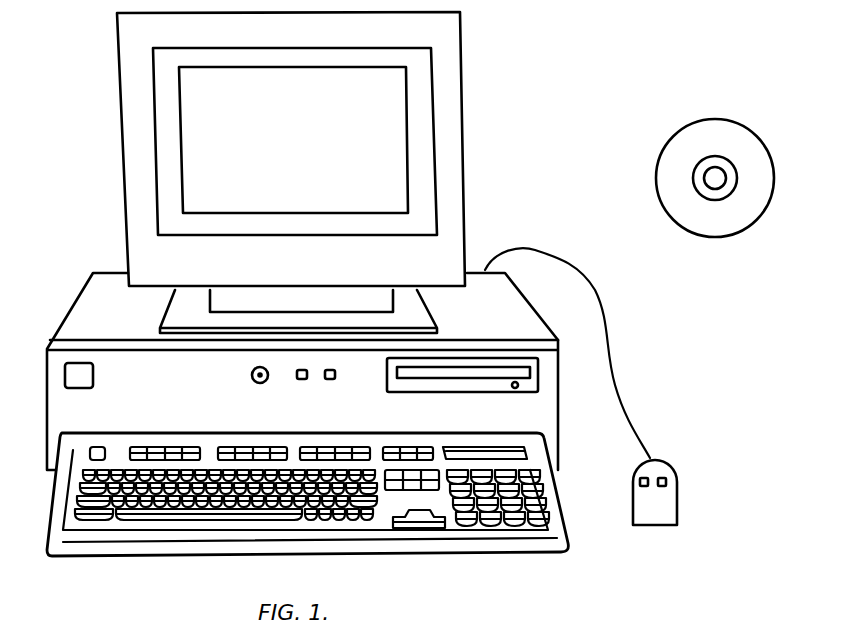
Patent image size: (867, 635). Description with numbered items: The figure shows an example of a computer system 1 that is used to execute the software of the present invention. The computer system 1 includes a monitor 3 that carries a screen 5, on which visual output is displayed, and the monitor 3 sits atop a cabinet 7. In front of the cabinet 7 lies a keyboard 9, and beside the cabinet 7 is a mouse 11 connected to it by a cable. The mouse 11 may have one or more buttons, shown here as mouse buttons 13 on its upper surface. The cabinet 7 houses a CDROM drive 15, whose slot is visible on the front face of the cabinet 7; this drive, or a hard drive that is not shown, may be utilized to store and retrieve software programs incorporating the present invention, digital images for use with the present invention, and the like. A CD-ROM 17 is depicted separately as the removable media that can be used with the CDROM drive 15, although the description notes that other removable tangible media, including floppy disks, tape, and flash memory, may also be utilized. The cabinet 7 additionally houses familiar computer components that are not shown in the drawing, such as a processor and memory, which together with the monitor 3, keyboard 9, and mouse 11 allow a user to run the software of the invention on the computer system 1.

The computer system 1 is at (609, 39).
The monitor 3 is at (465, 118).
The screen 5 is at (375, 108).
The cabinet 7 is at (508, 318).
The keyboard 9 is at (260, 553).
The mouse 11 is at (663, 508).
The mouse buttons 13 is at (645, 475).
The CDROM drive 15 is at (538, 375).
The CD-ROM 17 is at (742, 125).